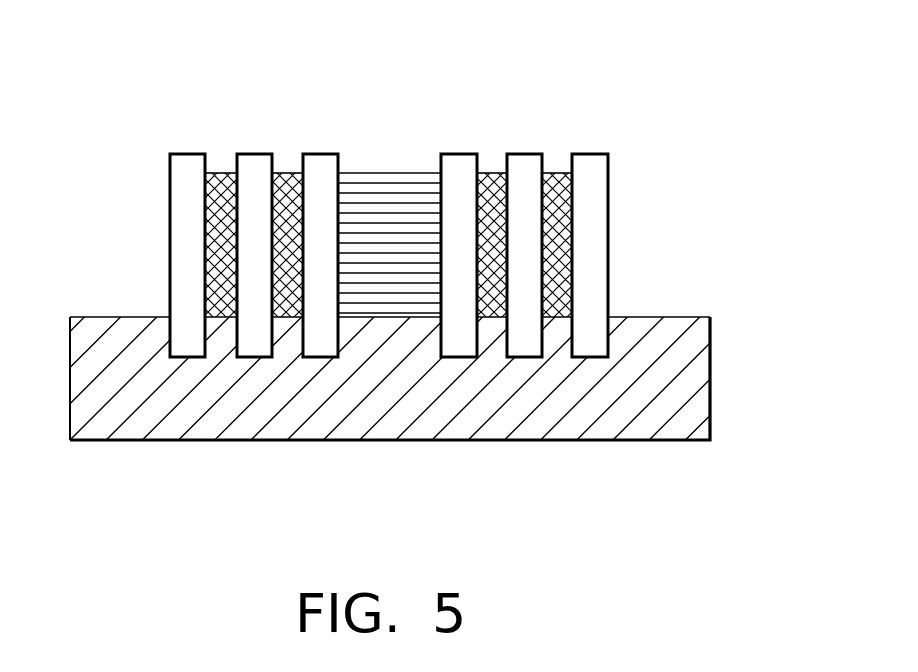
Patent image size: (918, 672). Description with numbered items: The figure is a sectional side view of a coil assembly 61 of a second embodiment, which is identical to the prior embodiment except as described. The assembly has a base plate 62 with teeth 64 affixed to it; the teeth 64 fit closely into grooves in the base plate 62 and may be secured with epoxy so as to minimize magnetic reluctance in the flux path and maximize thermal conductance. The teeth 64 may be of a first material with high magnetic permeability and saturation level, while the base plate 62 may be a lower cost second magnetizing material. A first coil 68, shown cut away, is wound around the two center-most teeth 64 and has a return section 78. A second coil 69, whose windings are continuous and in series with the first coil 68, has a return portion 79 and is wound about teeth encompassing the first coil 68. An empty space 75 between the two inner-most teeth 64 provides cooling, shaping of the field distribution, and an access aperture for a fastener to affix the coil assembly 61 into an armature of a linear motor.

The coil assembly 61 is at (422, 253).
The base plate 62 is at (710, 405).
The teeth 64 is at (592, 355).
The first coil 68 is at (408, 173).
The second coil 69 is at (223, 173).
The empty space 75 is at (423, 150).
The return section 78 is at (502, 173).
The return portion 79 is at (565, 173).